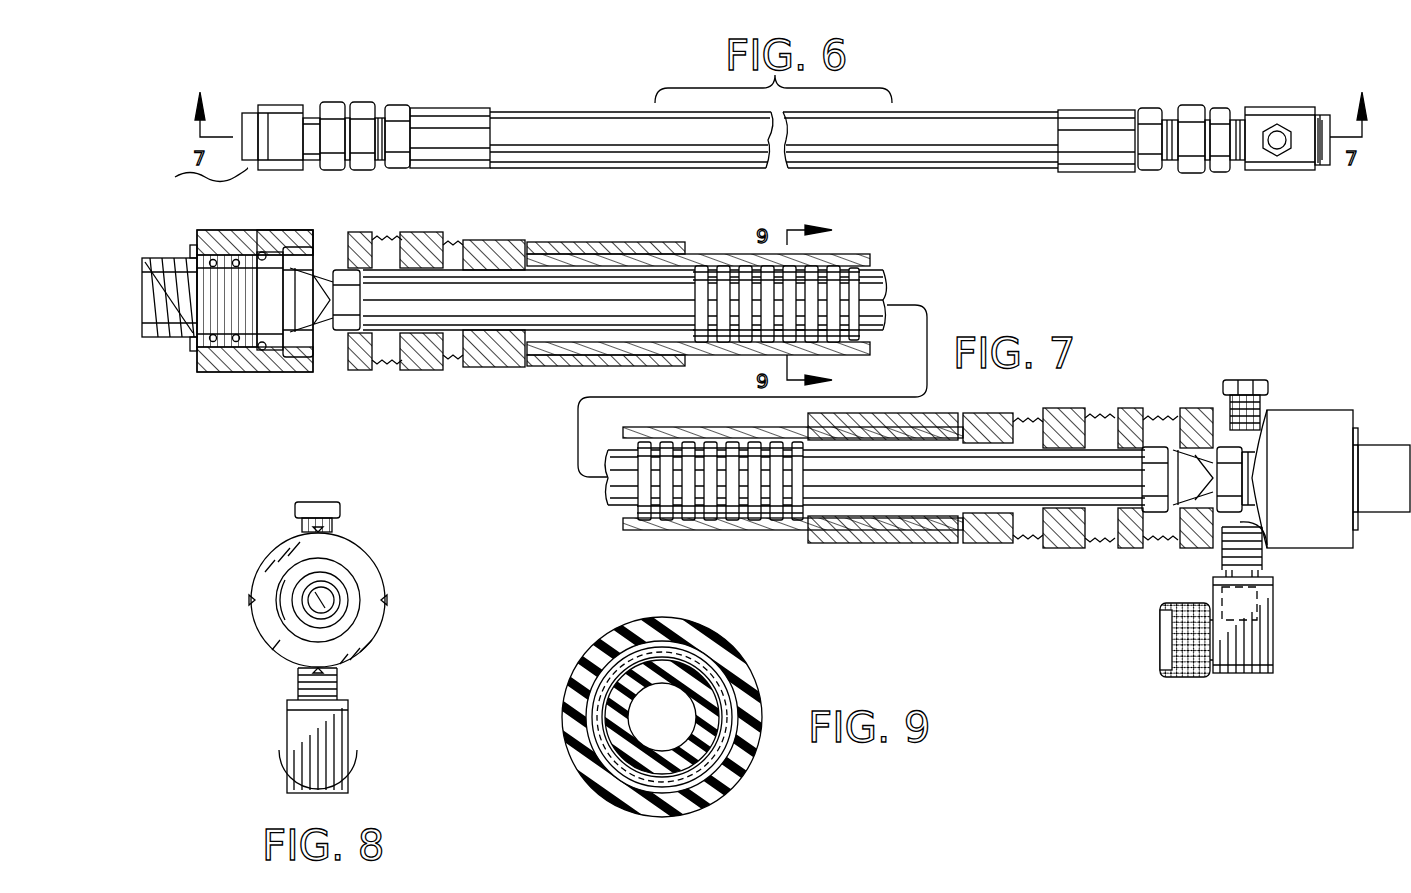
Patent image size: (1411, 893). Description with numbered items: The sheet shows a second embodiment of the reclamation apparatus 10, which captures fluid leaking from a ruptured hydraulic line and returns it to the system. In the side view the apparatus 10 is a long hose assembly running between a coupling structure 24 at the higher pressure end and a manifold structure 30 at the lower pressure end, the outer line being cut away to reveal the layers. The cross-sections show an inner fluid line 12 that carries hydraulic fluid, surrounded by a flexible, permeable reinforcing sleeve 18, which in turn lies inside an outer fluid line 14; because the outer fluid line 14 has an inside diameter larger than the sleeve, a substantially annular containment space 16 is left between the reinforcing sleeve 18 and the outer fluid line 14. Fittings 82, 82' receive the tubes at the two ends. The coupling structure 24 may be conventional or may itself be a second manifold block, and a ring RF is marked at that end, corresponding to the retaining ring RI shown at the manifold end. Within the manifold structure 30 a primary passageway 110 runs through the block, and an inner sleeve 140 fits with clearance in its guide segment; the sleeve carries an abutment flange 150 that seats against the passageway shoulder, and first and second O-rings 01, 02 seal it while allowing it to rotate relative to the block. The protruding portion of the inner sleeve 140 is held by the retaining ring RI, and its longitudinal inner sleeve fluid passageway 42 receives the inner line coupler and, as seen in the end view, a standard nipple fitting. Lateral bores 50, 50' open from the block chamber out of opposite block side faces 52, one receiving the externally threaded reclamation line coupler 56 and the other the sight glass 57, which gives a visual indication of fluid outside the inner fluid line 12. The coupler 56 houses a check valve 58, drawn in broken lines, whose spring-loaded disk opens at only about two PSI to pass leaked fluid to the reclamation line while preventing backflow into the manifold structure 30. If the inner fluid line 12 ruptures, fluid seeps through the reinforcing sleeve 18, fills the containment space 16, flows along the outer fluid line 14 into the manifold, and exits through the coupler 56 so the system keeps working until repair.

In FIG. 6, the reclamation apparatus 10 is at (1095, 105).
In FIG. 7, the reclamation apparatus 10 is at (948, 312).
In FIG. 9, the inner fluid line 12 is at (688, 688).
In FIG. 9, the outer fluid line 14 is at (716, 645).
In FIG. 9, the containment space 16 is at (612, 638).
In FIG. 9, the reinforcing sleeve 18 is at (732, 696).
In FIG. 6, the coupling structure 24 is at (265, 105).
In FIG. 7, the coupling structure 24 is at (258, 232).
In FIG. 6, the manifold structure 30 is at (1276, 107).
In FIG. 7, the manifold structure 30 is at (1312, 410).
In FIG. 8, the manifold structure 30 is at (355, 548).
In FIG. 7, the inner sleeve fluid passageway 42 is at (170, 320).
In FIG. 7, the lateral bore 50 is at (1220, 554).
In FIG. 7, the second lateral bore 50' is at (1253, 386).
In FIG. 7, the block side face 52 is at (1272, 548).
In FIG. 7, the reclamation line coupler 56 is at (1275, 648).
In FIG. 8, the reclamation line coupler 56 is at (348, 716).
In FIG. 6, the sight glass 57 is at (1264, 172).
In FIG. 7, the sight glass 57 is at (1228, 380).
In FIG. 8, the sight glass 57 is at (315, 502).
In FIG. 7, the check valve 58 is at (1270, 610).
In FIG. 7, the fitting 82 is at (516, 286).
In FIG. 7, the fitting 82' is at (1010, 465).
In FIG. 7, the primary passageway 110 is at (145, 282).
In FIG. 8, the primary passageway 110 is at (348, 612).
In FIG. 6, the inner sleeve 140 is at (1320, 172).
In FIG. 7, the abutment flange 150 is at (285, 362).
In FIG. 7, the first O-ring 01 is at (262, 252).
In FIG. 7, the second O-ring 02 is at (212, 258).
In FIG. 6, the fluid inlet RF is at (248, 107).
In FIG. 6, the retaining ring RI is at (1318, 115).
In FIG. 7, the retaining ring RI is at (1358, 530).
In FIG. 8, the retaining ring RI is at (352, 598).